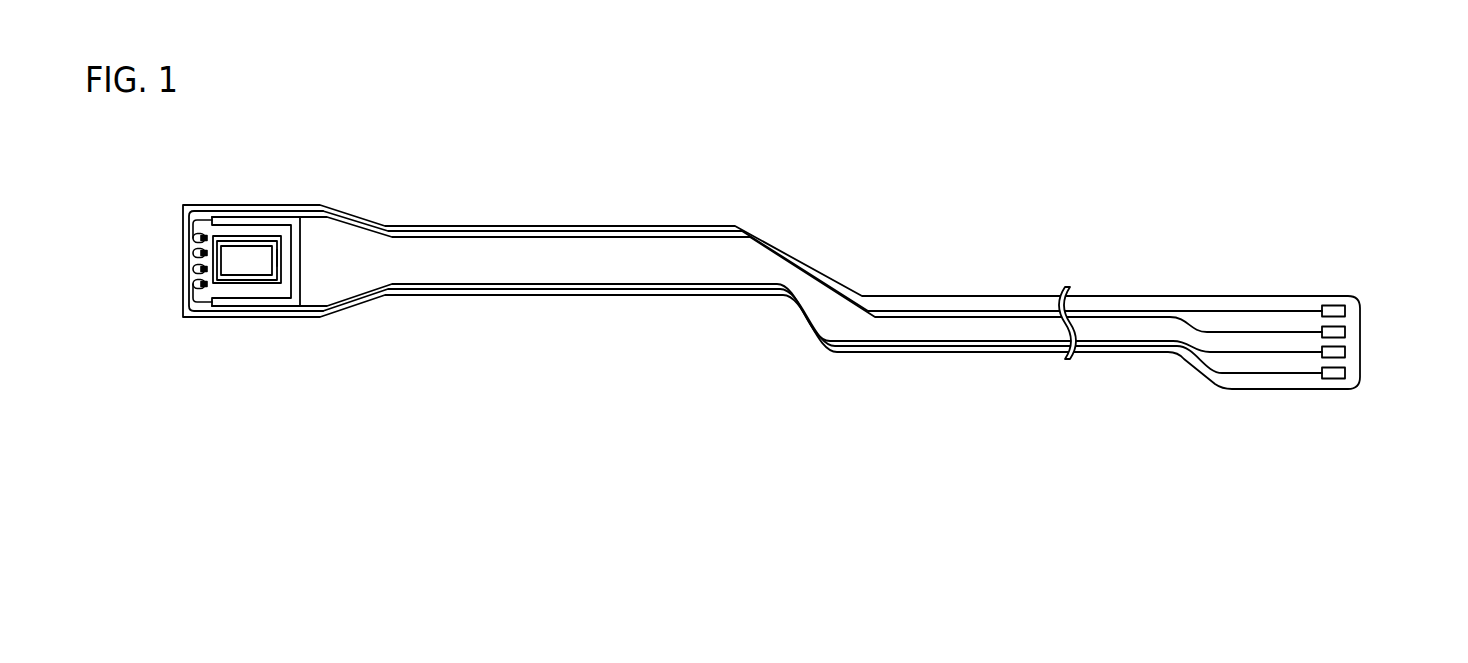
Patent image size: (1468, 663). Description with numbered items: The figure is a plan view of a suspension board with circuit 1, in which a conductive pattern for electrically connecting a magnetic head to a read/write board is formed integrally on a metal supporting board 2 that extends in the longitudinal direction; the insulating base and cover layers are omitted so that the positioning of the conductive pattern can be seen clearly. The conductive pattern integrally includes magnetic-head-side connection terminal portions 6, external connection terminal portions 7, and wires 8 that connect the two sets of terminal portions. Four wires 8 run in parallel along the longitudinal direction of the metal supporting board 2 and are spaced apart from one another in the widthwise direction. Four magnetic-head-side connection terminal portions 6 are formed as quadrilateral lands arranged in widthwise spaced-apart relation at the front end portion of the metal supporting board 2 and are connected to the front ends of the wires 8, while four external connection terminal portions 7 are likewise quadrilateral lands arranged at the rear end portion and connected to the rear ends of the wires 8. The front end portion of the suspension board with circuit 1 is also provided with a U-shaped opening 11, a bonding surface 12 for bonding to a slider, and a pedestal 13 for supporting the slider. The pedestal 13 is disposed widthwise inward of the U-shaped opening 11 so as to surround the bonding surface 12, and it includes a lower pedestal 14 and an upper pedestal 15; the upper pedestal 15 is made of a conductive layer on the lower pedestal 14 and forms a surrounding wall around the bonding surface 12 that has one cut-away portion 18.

The suspension board with circuit 1 is at (842, 528).
The metal supporting board 2 is at (545, 295).
The magnetic-head-side connection terminal portions 6 is at (196, 283).
The external connection terminal portions 7 is at (1345, 311).
The wires 8 is at (662, 237).
The U-shaped opening 11 is at (272, 301).
The bonding surface 12 is at (255, 260).
The pedestal 13 is at (235, 284).
The lower pedestal 14 is at (265, 237).
The upper pedestal 15 is at (228, 239).
The cut-away portion 18 is at (277, 258).